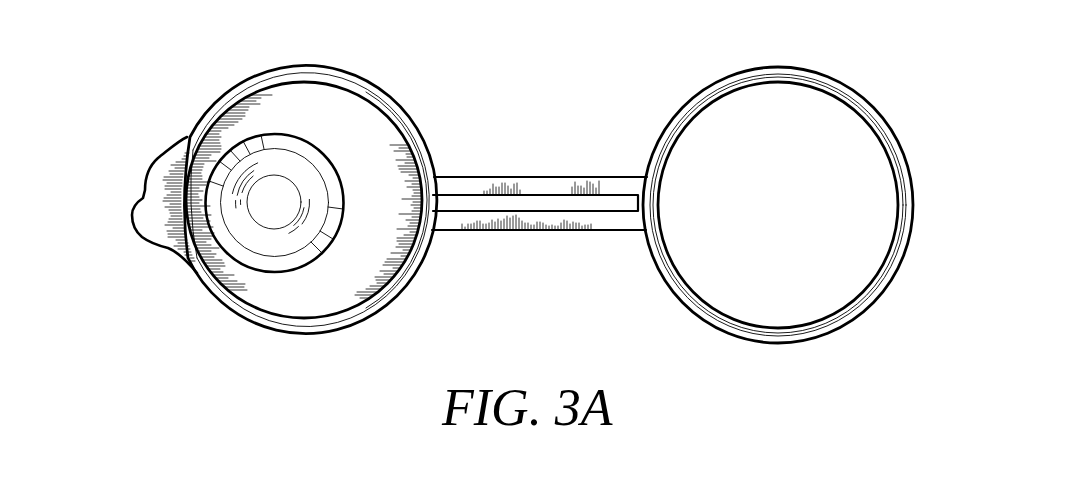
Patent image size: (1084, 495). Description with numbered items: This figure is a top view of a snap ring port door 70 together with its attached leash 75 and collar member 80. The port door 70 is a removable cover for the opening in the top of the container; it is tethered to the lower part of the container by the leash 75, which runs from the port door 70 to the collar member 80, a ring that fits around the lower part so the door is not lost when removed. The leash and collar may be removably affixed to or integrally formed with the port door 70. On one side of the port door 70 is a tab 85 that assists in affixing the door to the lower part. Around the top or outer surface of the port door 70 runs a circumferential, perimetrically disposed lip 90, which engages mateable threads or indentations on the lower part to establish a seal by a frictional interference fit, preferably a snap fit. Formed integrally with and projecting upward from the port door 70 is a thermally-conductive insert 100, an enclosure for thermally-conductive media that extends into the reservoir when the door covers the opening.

The port door 70 is at (357, 133).
The leash 75 is at (540, 188).
The collar member 80 is at (667, 127).
The tab 85 is at (163, 155).
The perimetrically disposed lip 90 is at (395, 273).
The thermally-conductive insert 100 is at (276, 201).